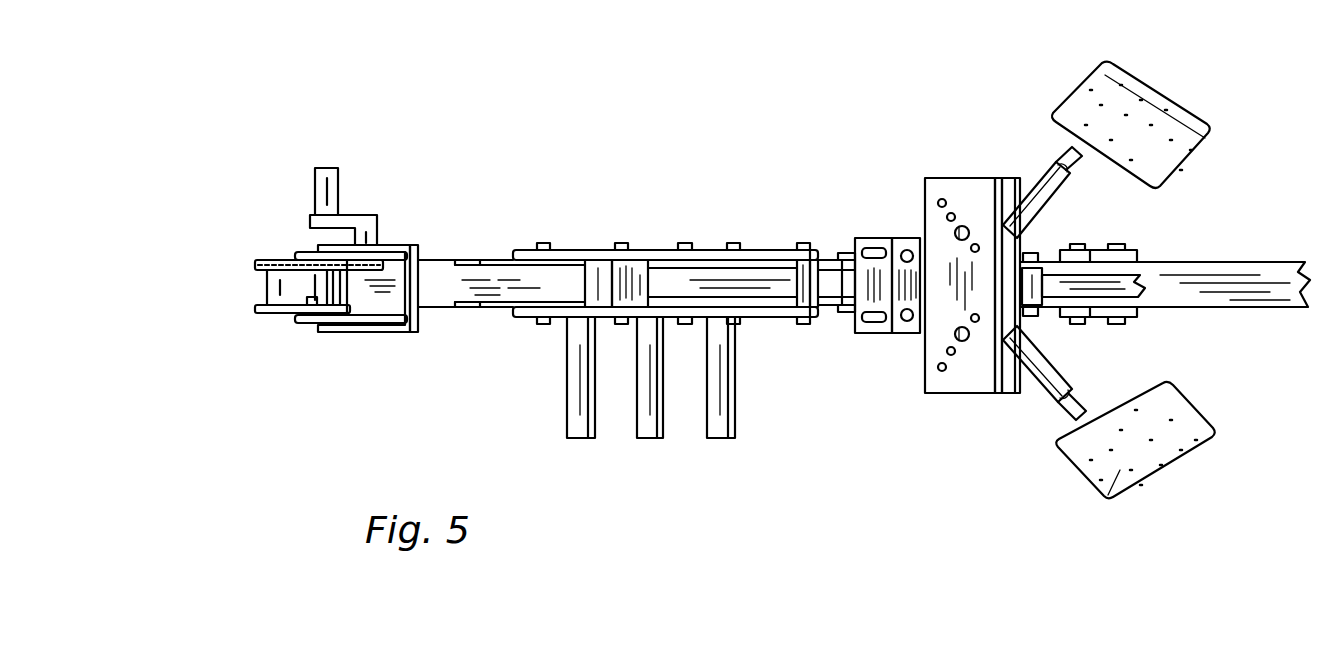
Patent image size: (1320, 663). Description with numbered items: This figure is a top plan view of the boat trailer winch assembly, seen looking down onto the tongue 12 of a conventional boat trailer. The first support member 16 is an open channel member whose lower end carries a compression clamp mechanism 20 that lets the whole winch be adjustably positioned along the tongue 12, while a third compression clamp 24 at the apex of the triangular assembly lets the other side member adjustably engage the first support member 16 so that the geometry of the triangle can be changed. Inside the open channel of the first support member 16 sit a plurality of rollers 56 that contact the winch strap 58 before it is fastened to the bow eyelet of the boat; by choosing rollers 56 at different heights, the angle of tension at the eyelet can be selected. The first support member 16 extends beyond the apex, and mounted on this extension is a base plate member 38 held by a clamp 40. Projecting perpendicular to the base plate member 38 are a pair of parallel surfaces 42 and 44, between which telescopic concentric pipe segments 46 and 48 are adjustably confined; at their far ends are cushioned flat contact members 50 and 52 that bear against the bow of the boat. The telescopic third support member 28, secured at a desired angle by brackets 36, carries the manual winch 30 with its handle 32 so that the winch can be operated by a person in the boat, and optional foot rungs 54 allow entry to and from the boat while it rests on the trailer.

The tongue 12 is at (1205, 262).
The first support member 16 is at (660, 265).
The compression clamp mechanism 20 is at (1132, 250).
The third compression clamp 24 is at (765, 250).
The third support member 28 is at (440, 262).
The manual winch 30 is at (262, 262).
The handle 32 is at (338, 186).
The brackets 36 is at (542, 243).
The base plate member 38 is at (905, 240).
The clamp 40 is at (872, 243).
The parallel surface 42 is at (960, 193).
The parallel surface 44 is at (1008, 185).
The telescopic concentric pipe segment 46 is at (1058, 190).
The telescopic concentric pipe segment 48 is at (1045, 405).
The cushioned flat contact member 50 is at (1135, 103).
The cushioned flat contact member 52 is at (1105, 497).
The foot rungs 54 is at (575, 430).
The rollers 56 is at (850, 297).
The winch strap 58 is at (1140, 295).